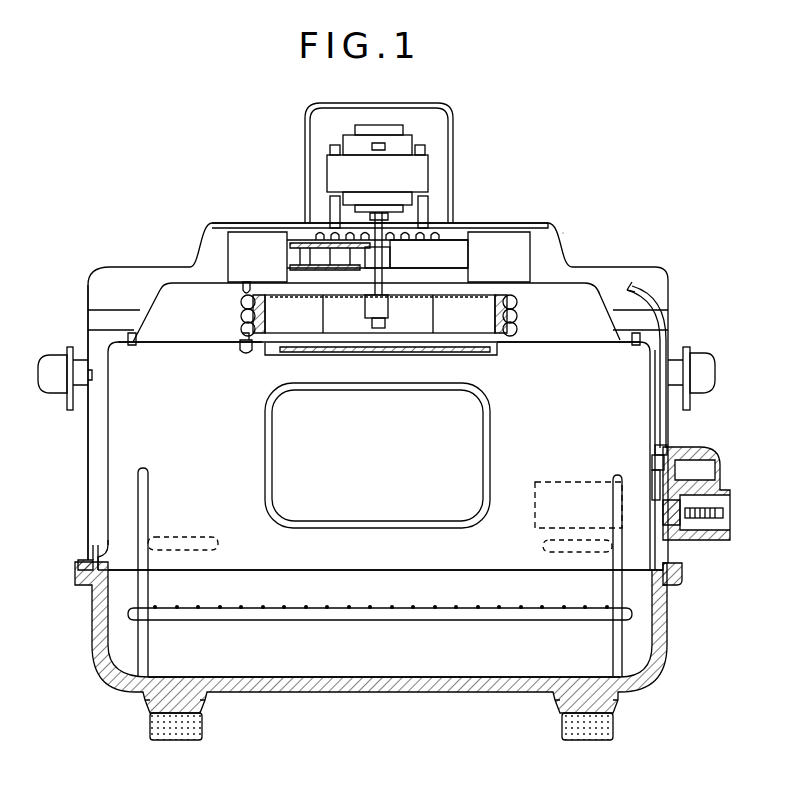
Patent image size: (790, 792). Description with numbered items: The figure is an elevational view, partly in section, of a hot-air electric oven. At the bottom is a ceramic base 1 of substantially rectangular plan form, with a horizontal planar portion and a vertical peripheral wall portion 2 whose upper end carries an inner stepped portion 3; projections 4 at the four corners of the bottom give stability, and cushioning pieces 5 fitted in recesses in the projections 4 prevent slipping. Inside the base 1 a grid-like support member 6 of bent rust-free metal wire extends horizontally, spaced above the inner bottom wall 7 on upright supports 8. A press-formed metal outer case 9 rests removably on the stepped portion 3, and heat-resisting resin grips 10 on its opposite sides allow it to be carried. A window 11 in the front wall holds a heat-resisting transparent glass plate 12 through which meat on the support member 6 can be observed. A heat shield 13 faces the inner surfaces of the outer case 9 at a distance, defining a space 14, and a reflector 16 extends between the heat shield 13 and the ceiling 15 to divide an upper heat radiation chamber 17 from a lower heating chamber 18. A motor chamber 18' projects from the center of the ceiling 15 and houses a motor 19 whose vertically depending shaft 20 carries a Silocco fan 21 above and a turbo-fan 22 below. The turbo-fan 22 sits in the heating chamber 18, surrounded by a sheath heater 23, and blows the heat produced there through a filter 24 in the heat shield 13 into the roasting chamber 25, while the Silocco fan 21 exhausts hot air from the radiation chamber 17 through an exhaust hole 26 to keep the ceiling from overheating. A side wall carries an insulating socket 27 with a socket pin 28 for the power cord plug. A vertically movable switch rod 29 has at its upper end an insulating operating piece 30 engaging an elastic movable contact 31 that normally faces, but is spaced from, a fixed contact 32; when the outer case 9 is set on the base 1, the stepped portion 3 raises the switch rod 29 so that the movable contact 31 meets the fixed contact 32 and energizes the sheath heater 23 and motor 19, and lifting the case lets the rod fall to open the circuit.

The base 1 is at (658, 675).
The peripheral wall portion 2 is at (685, 573).
The inner stepped portion 3 is at (670, 585).
The projections 4 is at (148, 703).
The cushioning pieces 5 is at (152, 730).
The grid-like support member 6 is at (380, 608).
The inner bottom wall 7 is at (370, 678).
The upright supports 8 is at (148, 650).
The outer case 9 is at (88, 450).
The grips 10 is at (53, 363).
The window 11 is at (268, 460).
The heat-resisting transparent glass plate 12 is at (378, 450).
The heat shield 13 is at (108, 412).
The space 14 is at (98, 520).
The ceiling 15 is at (117, 268).
The reflector 16 is at (163, 288).
The heat radiation chamber 17 is at (213, 242).
The heating chamber 18 is at (379, 361).
The motor chamber 18' is at (355, 153).
The motor 19 is at (327, 178).
The shaft 20 is at (383, 232).
The Silocco fan 21 is at (448, 258).
The turbo-fan 22 is at (488, 317).
The sheath heater 23 is at (262, 343).
The filter 24 is at (462, 356).
The roasting chamber 25 is at (578, 469).
The exhaust hole 26 is at (316, 238).
The socket 27 is at (712, 455).
The socket pin 28 is at (725, 513).
The switch rod 29 is at (653, 497).
The operating piece 30 is at (655, 468).
The movable contact 31 is at (655, 447).
The fixed contact 32 is at (665, 444).